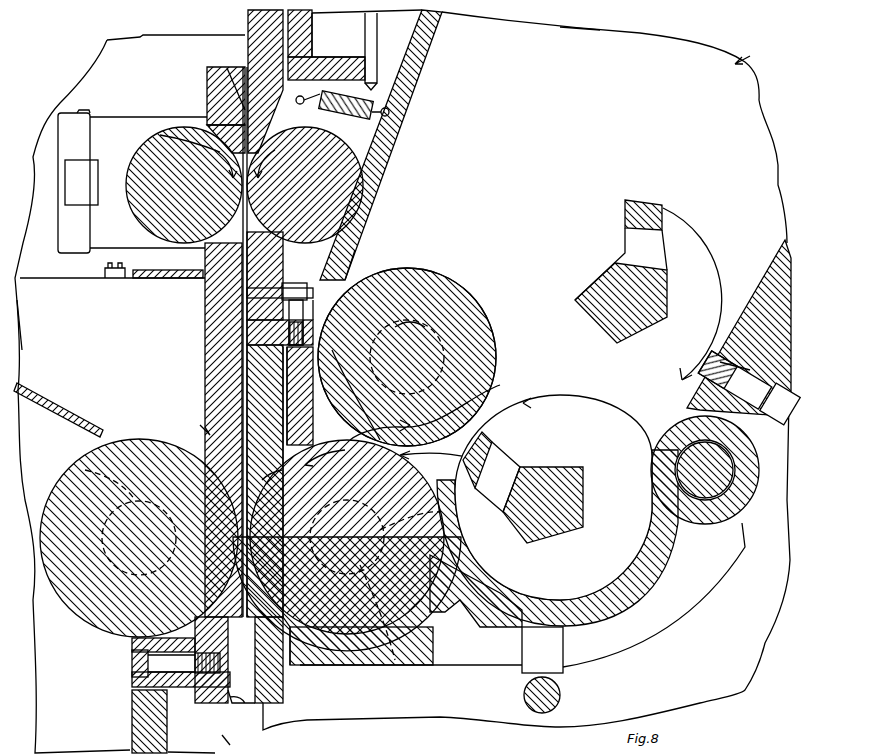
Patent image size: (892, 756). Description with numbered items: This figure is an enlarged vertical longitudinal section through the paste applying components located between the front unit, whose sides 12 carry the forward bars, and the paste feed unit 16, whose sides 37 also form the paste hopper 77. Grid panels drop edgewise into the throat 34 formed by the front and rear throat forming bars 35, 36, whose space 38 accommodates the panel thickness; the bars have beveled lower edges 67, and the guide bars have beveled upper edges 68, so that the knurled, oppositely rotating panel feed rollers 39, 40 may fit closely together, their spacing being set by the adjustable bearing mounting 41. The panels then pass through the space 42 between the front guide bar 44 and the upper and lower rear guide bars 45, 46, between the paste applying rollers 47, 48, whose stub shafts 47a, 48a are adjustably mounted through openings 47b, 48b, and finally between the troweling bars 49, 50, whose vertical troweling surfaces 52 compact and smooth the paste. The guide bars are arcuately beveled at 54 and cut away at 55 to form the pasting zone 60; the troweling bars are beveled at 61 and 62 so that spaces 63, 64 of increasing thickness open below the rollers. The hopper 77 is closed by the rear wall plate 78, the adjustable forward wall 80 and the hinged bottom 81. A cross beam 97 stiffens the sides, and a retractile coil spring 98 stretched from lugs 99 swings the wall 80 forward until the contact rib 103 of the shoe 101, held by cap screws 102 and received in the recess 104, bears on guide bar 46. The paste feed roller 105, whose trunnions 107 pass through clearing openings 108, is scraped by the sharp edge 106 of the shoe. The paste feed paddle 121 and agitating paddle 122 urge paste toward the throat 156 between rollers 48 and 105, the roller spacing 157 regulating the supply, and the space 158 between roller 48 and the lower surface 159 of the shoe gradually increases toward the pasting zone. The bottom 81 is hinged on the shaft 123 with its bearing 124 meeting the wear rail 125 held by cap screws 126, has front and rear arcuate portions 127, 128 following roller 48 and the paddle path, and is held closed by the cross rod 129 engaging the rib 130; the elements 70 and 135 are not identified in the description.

The sides of unit 12 is at (55, 341).
The paste feed unit 16 is at (748, 59).
The throat 34 is at (227, 68).
The front throat forming bar 35 is at (207, 77).
The rear throat forming bar 36 is at (258, 46).
The sides of unit 37 is at (590, 67).
The space 38 is at (207, 112).
The panel feed roller 39 is at (135, 212).
The panel feed roller 40 is at (355, 190).
The adjustable bearing mounting 41 is at (86, 110).
The space 42 is at (230, 320).
The front guide bar 44 is at (212, 361).
The upper rear guide bar 45 is at (366, 232).
The lower rear guide bar 46 is at (285, 385).
The paste applying roller 47 is at (90, 625).
The stub shaft 47a is at (88, 612).
The opening 47b is at (85, 462).
The paste applying roller 48 is at (443, 528).
The stub shaft 48a is at (363, 595).
The opening 48b is at (440, 510).
The troweling bar 49 is at (182, 690).
The troweling bar 50 is at (283, 700).
The troweling surfaces 52 is at (222, 660).
The arcuate bevel 54 is at (282, 480).
The cut-away portions 55 is at (200, 425).
The pasting zone 60 is at (288, 500).
The arcuate bevel 61 is at (135, 682).
The arcuate bevel 62 is at (290, 662).
The space 63 is at (132, 655).
The space 64 is at (325, 667).
The beveled lower edges 67 is at (230, 155).
The beveled upper edges 68 is at (190, 254).
The lower end 70 is at (246, 704).
The paste hopper 77 is at (690, 73).
The rear wall forming plate 78 is at (782, 258).
The forward adjustable hopper wall 80 is at (410, 85).
The hopper bottom 81 is at (635, 600).
The cross beam 97 is at (305, 40).
The retractile coil spring 98 is at (350, 112).
The lugs 99 is at (372, 88).
The shoe 101 is at (372, 290).
The cap screws 102 is at (297, 288).
The contact rib 103 is at (318, 338).
The recess 104 is at (246, 296).
The paste feed roller 105 is at (440, 276).
The scraper edge 106 is at (335, 445).
The trunnions 107 is at (425, 327).
The openings 108 is at (440, 300).
The paste feed paddle 121 is at (490, 440).
The agitating paddle 122 is at (650, 205).
The shaft 123 is at (702, 505).
The bearing 124 is at (745, 547).
The wear rail 125 is at (690, 410).
The cap screws 126 is at (772, 420).
The front arcuate portion 127 is at (430, 641).
The rear arcuate portion 128 is at (590, 618).
The cross rod 129 is at (560, 698).
The rib 130 is at (525, 650).
The bar 135 is at (45, 400).
The throat 156 is at (412, 456).
The roller spacing 157 is at (437, 410).
The space 158 is at (300, 748).
The lower surface of shoe 159 is at (338, 372).